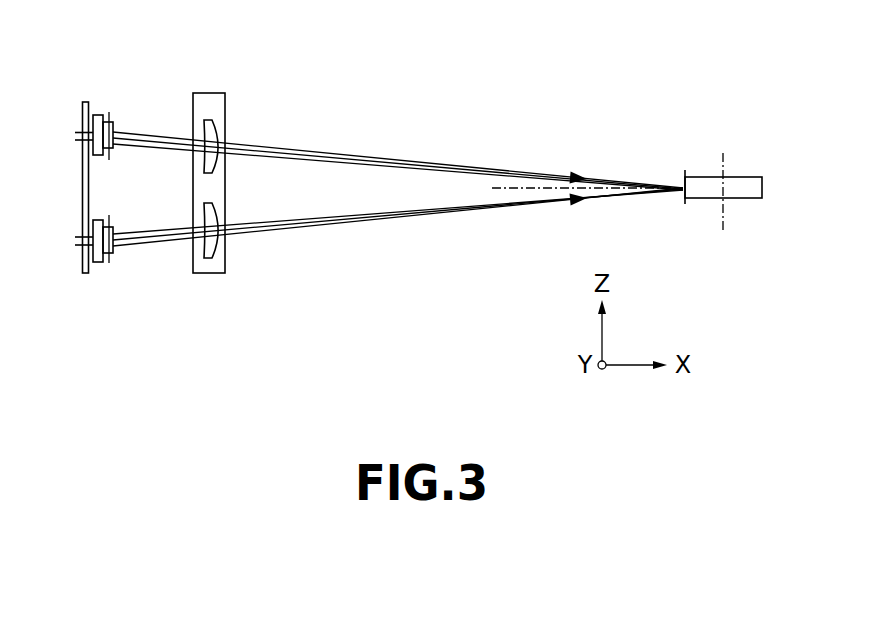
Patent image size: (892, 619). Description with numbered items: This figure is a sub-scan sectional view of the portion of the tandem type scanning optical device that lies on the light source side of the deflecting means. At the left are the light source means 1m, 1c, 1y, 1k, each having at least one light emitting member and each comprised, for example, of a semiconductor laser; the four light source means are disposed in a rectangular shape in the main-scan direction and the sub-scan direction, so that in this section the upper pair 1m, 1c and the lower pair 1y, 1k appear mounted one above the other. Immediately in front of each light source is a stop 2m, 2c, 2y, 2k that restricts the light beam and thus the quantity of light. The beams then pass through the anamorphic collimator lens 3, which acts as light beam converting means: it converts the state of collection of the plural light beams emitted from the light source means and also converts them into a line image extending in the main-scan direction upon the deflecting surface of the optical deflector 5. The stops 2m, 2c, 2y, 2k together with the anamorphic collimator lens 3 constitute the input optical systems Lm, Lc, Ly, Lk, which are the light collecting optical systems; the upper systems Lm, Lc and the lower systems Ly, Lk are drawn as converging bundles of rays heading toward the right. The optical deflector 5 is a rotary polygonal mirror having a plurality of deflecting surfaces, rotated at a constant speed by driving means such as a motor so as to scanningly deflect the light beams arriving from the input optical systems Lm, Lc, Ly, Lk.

The light source means 1m is at (91, 105).
The light source means 1c is at (101, 116).
The light source means 1y is at (84, 271).
The light source means 1k is at (99, 262).
The stop 2m is at (176, 110).
The stop 2c is at (192, 135).
The stop 2y is at (178, 269).
The stop 2k is at (191, 258).
The anamorphic collimator lens 3 is at (212, 108).
The optical deflector 5 is at (699, 192).
The input optical system Lm is at (398, 100).
The input optical system Lc is at (398, 100).
The input optical system Ly is at (398, 279).
The input optical system Lk is at (398, 279).